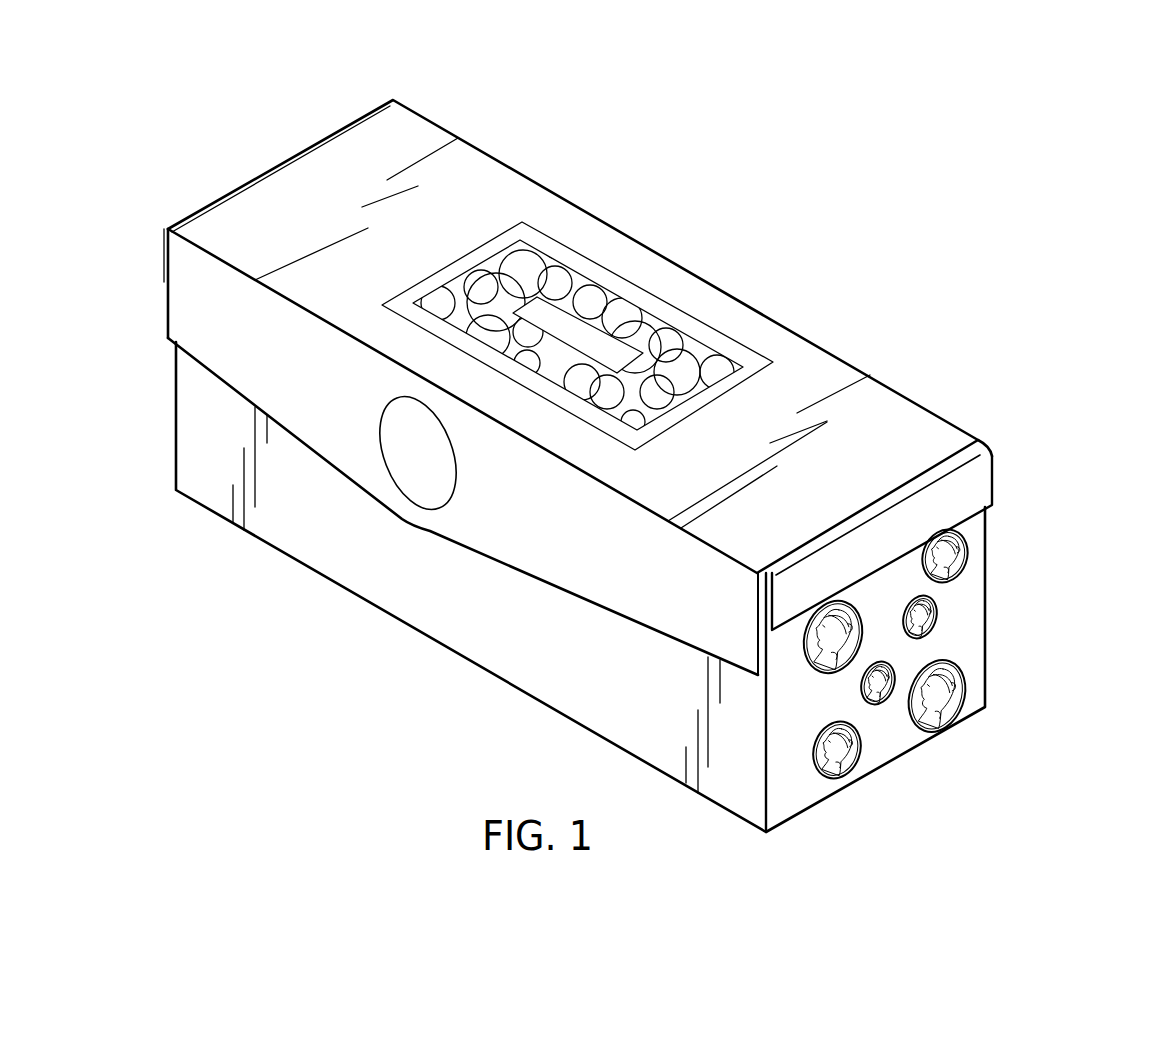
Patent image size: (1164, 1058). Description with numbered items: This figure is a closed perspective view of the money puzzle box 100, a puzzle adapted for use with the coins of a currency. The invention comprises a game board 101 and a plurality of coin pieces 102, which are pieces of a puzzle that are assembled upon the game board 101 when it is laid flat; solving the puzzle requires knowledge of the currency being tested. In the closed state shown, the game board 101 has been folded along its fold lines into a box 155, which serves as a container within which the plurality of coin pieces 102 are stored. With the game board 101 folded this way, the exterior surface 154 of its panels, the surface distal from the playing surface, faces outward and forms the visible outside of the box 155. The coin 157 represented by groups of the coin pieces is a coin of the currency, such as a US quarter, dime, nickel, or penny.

The money puzzle box 100 is at (150, 142).
The game board 101 is at (690, 268).
The plurality of coin pieces 102 is at (1056, 492).
The exterior surface 154 is at (452, 190).
The box 155 is at (908, 398).
The coin 157 is at (938, 615).